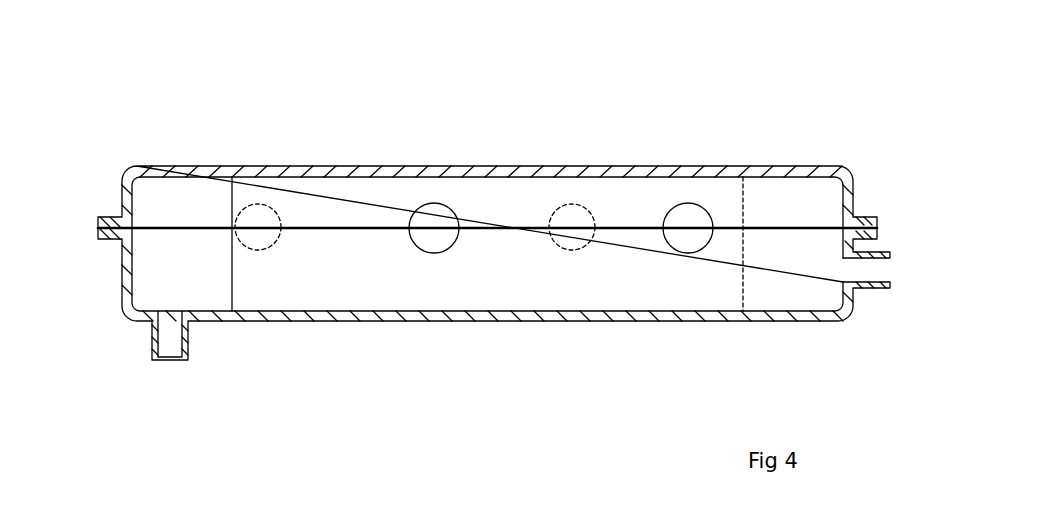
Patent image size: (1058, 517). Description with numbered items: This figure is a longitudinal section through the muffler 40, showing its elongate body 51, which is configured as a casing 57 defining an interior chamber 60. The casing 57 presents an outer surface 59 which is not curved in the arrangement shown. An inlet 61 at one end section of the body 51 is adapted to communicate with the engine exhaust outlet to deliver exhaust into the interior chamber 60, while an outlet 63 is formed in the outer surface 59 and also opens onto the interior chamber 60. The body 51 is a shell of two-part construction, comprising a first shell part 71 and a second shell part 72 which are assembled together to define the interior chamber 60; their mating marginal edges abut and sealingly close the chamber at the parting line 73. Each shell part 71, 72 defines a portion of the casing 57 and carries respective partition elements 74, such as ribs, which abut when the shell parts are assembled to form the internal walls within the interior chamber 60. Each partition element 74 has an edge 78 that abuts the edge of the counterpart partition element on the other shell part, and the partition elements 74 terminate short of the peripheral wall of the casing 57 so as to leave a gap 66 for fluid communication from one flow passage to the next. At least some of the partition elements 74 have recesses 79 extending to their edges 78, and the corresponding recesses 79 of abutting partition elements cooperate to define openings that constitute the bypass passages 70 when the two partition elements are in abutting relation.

The muffler 40 is at (180, 115).
The body 51 is at (252, 165).
The casing 57 is at (370, 165).
The outer surface 59 is at (405, 318).
The interior chamber 60 is at (582, 298).
The inlet 61 is at (890, 283).
The outlet 63 is at (152, 337).
The gap 66 is at (168, 274).
The bypass passages 70 is at (432, 212).
The first shell part 71 is at (813, 167).
The second shell part 72 is at (842, 322).
The parting line 73 is at (860, 217).
The partition elements 74 is at (617, 200).
The edge 78 is at (313, 225).
The recesses 79 is at (457, 210).